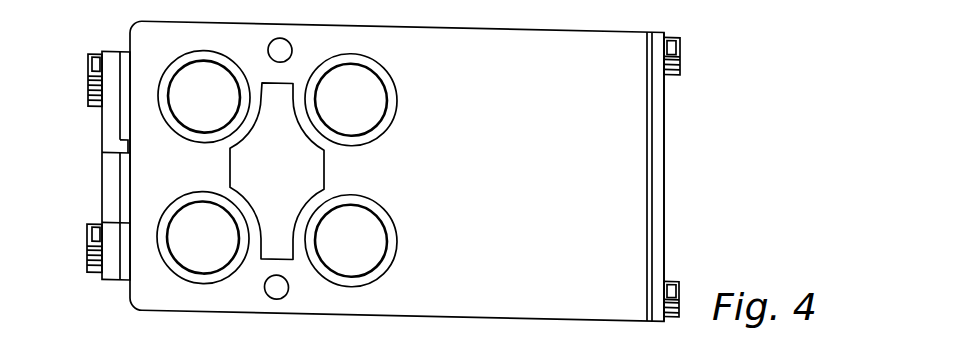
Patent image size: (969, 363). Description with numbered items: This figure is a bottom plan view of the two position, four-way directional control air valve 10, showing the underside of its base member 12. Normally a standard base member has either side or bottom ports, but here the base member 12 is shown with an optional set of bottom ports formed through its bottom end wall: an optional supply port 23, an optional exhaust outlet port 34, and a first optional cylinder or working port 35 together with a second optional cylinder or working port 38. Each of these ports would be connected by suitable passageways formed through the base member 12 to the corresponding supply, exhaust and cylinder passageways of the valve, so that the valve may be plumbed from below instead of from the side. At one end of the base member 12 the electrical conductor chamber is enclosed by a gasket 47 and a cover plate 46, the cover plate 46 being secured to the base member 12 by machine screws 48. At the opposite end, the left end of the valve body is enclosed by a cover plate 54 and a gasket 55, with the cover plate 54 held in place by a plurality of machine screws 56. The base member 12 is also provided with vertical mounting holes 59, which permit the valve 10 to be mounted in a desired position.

The directional control air valve 10 is at (124, 20).
The base member 12 is at (530, 302).
The supply port 23 is at (184, 76).
The exhaust outlet port 34 is at (378, 111).
The first cylinder or working port 35 is at (176, 254).
The second cylinder or working port 38 is at (375, 236).
The cover plate 46 is at (657, 153).
The gasket 47 is at (650, 215).
The machine screws 48 is at (680, 47).
The cover plate 54 is at (110, 114).
The gasket 55 is at (124, 140).
The machine screws 56 is at (88, 70).
The vertical mounting holes 59 is at (280, 38).